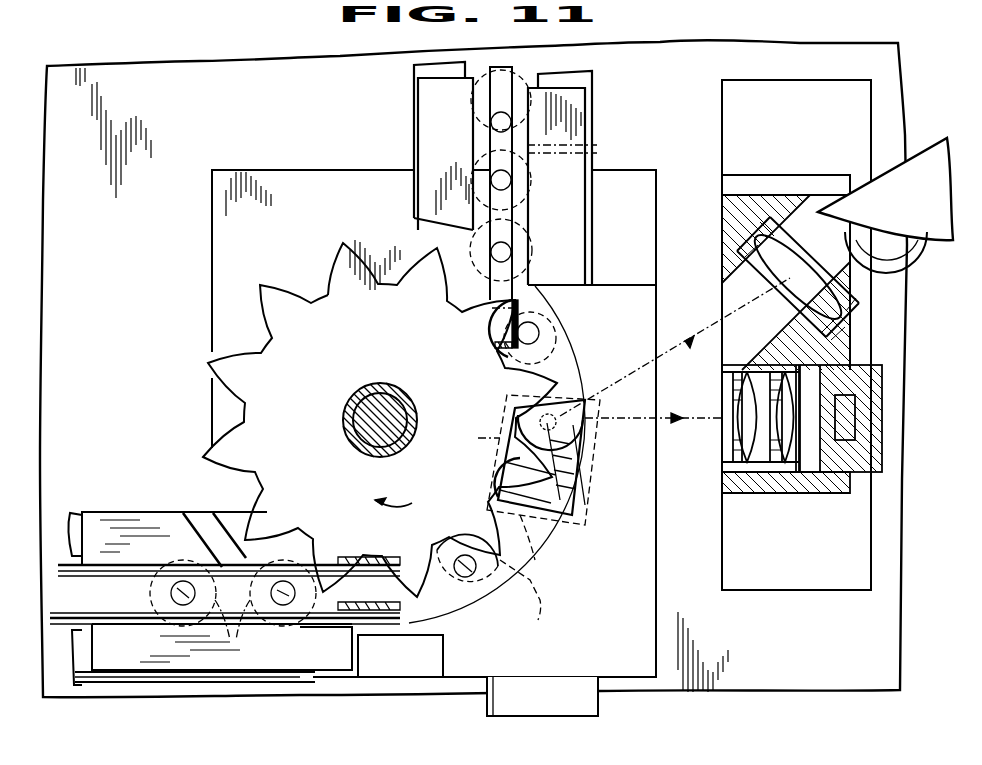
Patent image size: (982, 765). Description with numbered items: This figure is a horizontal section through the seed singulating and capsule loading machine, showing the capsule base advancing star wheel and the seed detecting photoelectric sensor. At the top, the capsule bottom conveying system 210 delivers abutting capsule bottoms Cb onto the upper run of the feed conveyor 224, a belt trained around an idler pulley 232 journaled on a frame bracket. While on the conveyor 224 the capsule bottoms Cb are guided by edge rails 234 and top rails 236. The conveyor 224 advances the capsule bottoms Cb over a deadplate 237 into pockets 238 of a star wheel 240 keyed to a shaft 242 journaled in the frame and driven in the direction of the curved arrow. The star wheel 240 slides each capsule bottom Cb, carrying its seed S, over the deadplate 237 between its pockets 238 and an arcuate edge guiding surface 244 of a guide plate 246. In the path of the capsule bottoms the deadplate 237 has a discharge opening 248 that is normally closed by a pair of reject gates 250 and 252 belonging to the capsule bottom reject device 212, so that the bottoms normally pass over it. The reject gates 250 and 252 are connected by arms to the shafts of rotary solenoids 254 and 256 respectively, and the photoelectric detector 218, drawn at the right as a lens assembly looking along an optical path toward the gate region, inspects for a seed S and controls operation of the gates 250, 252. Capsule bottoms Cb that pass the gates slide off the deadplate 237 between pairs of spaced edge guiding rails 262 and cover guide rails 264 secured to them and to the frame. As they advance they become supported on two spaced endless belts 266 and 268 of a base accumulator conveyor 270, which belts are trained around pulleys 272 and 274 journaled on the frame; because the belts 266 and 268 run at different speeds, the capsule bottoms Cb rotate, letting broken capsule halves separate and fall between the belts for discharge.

The capsule bottom conveying system 210 is at (484, 97).
The capsule bottom reject device 212 is at (586, 458).
The seed detecting photoelectric device 218 is at (786, 497).
The feed conveyor 224 is at (501, 68).
The idler pulley 232 is at (520, 302).
The edge rails 234 is at (414, 130).
The top rails 236 is at (430, 113).
The deadplate 237 is at (548, 322).
The pockets 238 is at (323, 257).
The star wheel 240 is at (404, 337).
The shaft 242 is at (380, 396).
The arcuate edge guiding surface 244 is at (568, 352).
The guide plate 246 is at (712, 405).
The discharge opening 248 is at (552, 522).
The reject gate 250 is at (504, 470).
The reject gate 252 is at (562, 494).
The rotary solenoid 254 is at (519, 572).
The rotary solenoid 256 is at (712, 383).
The edge guiding rails 262 is at (72, 522).
The cover guide rails 264 is at (168, 502).
The endless belt 266 is at (347, 621).
The endless belt 268 is at (330, 560).
The base accumulator conveyor 270 is at (317, 665).
The pulley 272 is at (400, 628).
The pulley 274 is at (408, 556).
The capsule base Cb is at (422, 400).
The seed S is at (498, 420).